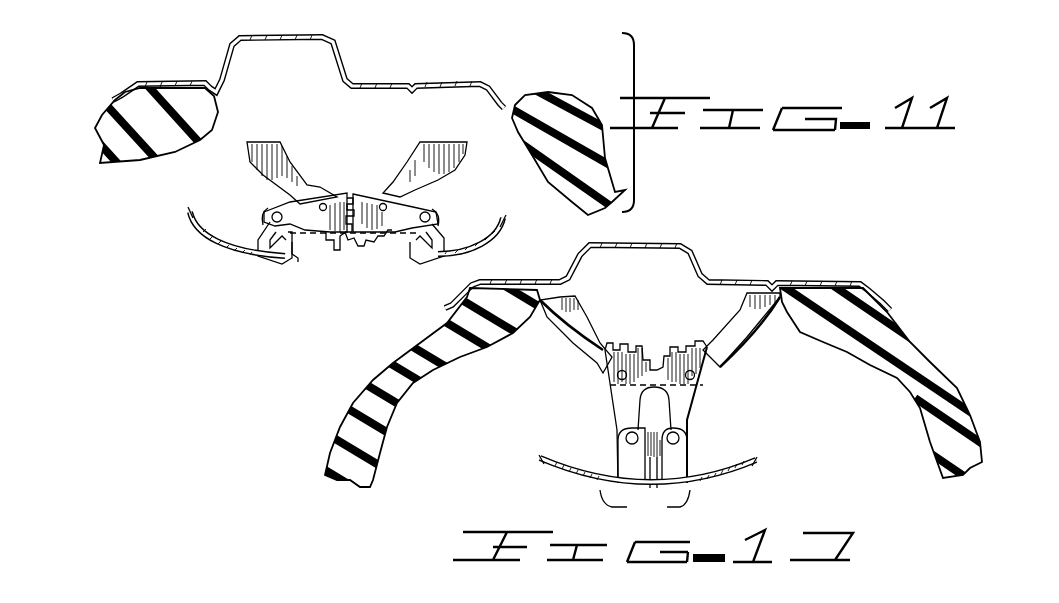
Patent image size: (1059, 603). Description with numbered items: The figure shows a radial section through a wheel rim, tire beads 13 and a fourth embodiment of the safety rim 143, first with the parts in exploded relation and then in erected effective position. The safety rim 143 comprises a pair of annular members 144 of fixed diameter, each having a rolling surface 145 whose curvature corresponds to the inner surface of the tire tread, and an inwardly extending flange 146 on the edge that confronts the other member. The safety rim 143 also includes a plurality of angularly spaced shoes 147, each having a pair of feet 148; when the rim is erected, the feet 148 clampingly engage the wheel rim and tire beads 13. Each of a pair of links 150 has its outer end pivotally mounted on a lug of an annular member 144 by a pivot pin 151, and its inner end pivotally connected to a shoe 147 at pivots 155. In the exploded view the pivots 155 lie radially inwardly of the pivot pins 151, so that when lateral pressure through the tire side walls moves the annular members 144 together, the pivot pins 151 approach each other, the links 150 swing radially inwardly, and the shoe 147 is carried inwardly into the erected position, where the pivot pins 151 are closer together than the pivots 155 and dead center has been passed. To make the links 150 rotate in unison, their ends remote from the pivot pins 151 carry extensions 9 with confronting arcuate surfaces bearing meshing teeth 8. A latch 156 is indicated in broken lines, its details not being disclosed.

In FIG. 12, the teeth 8 is at (627, 357).
In FIG. 12, the extensions 9 is at (610, 363).
In FIG. 11, the wheel rim and tire beads 13 is at (190, 143).
In FIG. 12, the wheel rim and tire beads 13 is at (498, 337).
In FIG. 11, the safety rim 143 is at (353, 267).
In FIG. 12, the safety rim 143 is at (755, 425).
In FIG. 11, the annular members 144 is at (236, 248).
In FIG. 12, the annular members 144 is at (648, 487).
In FIG. 11, the rolling surface 145 is at (236, 238).
In FIG. 11, the flange 146 is at (296, 265).
In FIG. 11, the shoes 147 is at (338, 202).
In FIG. 12, the shoes 147 is at (630, 348).
In FIG. 11, the feet 148 is at (272, 142).
In FIG. 12, the feet 148 is at (562, 318).
In FIG. 12, the links 150 is at (693, 405).
In FIG. 11, the pivot pin 151 is at (266, 210).
In FIG. 12, the pivot pin 151 is at (628, 470).
In FIG. 11, the pivots 155 is at (326, 203).
In FIG. 12, the pivots 155 is at (614, 380).
In FIG. 12, the latch 156 is at (638, 420).